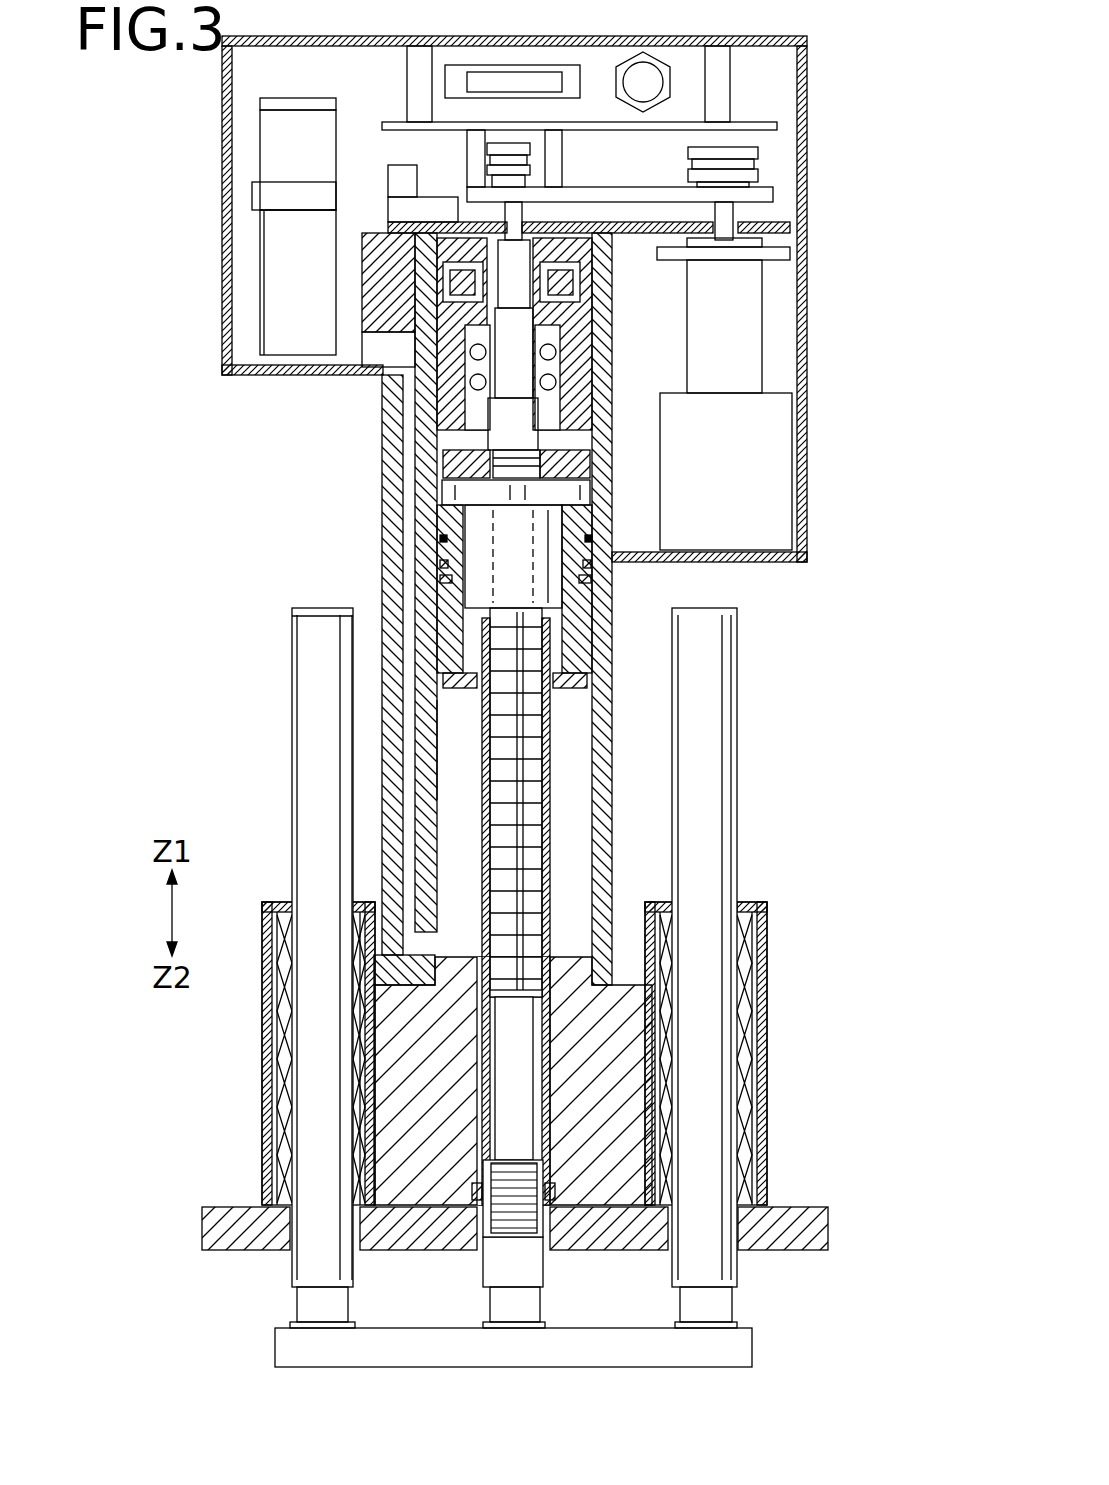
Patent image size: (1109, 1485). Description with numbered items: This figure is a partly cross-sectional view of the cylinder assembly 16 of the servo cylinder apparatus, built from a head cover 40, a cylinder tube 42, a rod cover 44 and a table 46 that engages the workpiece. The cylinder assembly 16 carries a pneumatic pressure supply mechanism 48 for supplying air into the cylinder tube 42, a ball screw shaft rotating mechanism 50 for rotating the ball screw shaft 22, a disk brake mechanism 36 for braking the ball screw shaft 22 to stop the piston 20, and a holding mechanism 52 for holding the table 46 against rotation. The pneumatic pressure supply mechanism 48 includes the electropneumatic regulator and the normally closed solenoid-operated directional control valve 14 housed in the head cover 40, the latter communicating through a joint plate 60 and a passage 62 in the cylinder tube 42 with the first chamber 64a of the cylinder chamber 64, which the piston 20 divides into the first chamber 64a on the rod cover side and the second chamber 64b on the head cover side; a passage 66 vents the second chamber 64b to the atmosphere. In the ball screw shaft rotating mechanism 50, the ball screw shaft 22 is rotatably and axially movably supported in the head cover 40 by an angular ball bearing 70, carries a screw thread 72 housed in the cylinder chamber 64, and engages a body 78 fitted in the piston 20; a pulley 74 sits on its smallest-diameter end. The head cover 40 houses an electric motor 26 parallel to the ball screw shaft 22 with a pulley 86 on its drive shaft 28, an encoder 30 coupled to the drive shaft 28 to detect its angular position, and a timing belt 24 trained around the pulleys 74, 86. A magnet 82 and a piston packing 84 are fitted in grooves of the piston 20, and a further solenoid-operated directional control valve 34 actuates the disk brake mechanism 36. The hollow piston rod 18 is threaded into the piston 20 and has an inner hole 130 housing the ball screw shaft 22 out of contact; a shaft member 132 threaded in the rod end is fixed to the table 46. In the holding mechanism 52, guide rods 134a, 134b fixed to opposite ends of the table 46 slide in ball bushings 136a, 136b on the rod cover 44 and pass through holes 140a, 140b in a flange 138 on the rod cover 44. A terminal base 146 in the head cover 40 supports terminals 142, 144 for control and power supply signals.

The normally closed solenoid-operated directional control valve 14 is at (286, 180).
The cylinder assembly 16 is at (254, 587).
The piston rod 18 is at (545, 990).
The piston 20 is at (580, 660).
The ball screw shaft 22 is at (560, 420).
The timing belt 24 is at (600, 190).
The electric motor 26 is at (752, 330).
The drive shaft 28 is at (724, 218).
The encoder 30 is at (760, 460).
The normally closed solenoid-operated directional control valve 34 is at (402, 178).
The disk brake mechanism 36 is at (415, 305).
The head cover 40 is at (216, 338).
The cylinder tube 42 is at (358, 550).
The rod cover 44 is at (640, 1080).
The table 46 is at (446, 1342).
The pneumatic pressure supply mechanism 48 is at (384, 510).
The ball screw shaft rotating mechanism 50 is at (782, 162).
The holding mechanism 52 is at (262, 905).
The joint plate 60 is at (345, 290).
The passage 62 is at (410, 680).
The cylinder chamber 64 is at (450, 740).
The first chamber 64a is at (450, 785).
The second chamber 64b is at (450, 490).
The passage 66 is at (448, 456).
The angular ball bearing 70 is at (560, 385).
The screw thread 72 is at (530, 775).
The pulley 74 is at (515, 182).
The body 78 is at (522, 585).
The magnet 82 is at (448, 575).
The piston packing 84 is at (607, 527).
The pulley 86 is at (740, 180).
The inner hole 130 is at (513, 1030).
The shaft member 132 is at (523, 1275).
The guide rod 134a is at (320, 812).
The guide rod 134b is at (712, 790).
The ball bushing 136a is at (280, 1052).
The ball bushing 136b is at (748, 1010).
The flange 138 is at (230, 1215).
The hole 140a is at (300, 1245).
The hole 140b is at (722, 1250).
The terminal 142 is at (482, 72).
The terminal 144 is at (648, 77).
The terminal base 146 is at (690, 62).